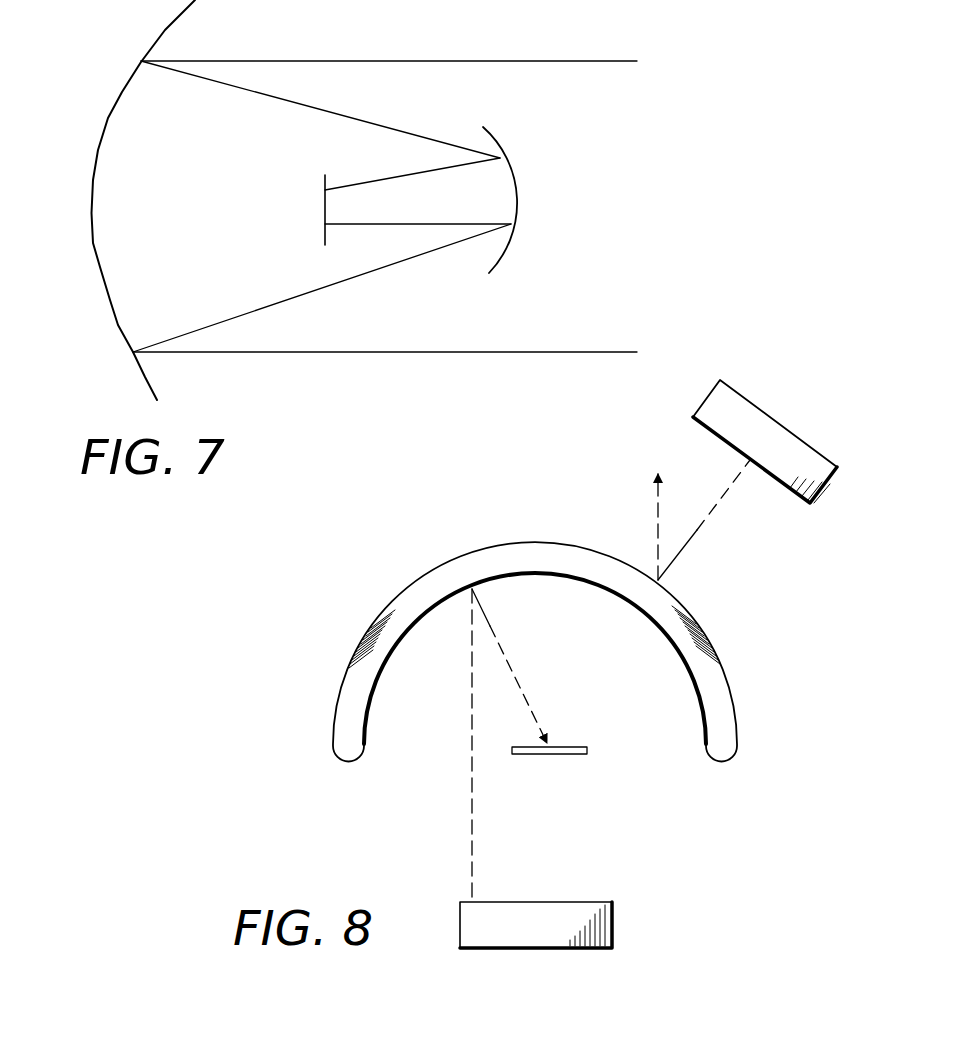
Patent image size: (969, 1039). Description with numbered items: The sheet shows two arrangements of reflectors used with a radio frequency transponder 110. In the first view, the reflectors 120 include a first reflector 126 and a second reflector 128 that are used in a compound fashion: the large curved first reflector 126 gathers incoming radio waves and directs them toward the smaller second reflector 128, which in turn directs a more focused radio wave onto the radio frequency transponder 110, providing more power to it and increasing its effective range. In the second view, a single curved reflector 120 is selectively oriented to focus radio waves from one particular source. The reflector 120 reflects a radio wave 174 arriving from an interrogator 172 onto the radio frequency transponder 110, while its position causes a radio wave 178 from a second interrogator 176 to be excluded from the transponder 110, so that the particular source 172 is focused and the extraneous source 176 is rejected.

In FIG. 7, the radio frequency transponder 110 is at (323, 203).
In FIG. 8, the radio frequency transponder 110 is at (547, 754).
In FIG. 7, the reflector 120 is at (118, 325).
In FIG. 8, the reflector 120 is at (733, 702).
In FIG. 7, the first reflector 126 is at (108, 118).
In FIG. 7, the second reflector 128 is at (517, 197).
In FIG. 8, the interrogator 172 is at (612, 920).
In FIG. 8, the radio wave 174 is at (472, 760).
In FIG. 8, the second interrogator 176 is at (782, 422).
In FIG. 8, the radio wave 178 is at (720, 500).